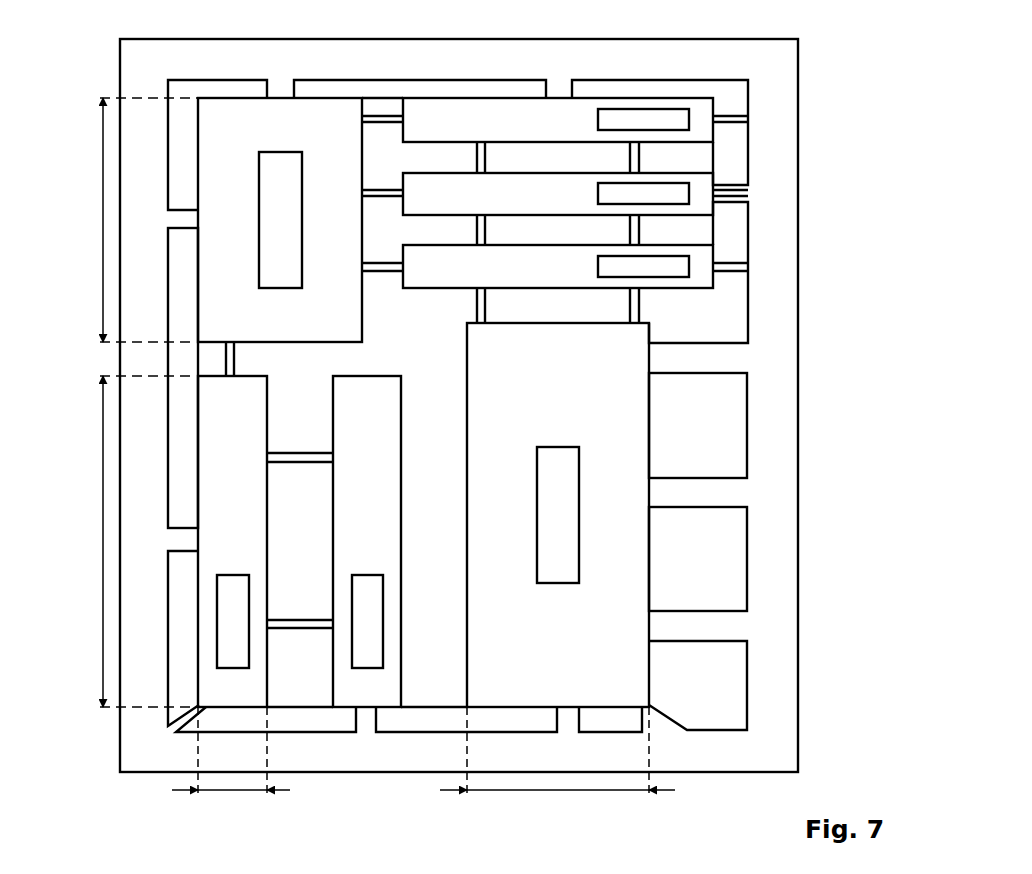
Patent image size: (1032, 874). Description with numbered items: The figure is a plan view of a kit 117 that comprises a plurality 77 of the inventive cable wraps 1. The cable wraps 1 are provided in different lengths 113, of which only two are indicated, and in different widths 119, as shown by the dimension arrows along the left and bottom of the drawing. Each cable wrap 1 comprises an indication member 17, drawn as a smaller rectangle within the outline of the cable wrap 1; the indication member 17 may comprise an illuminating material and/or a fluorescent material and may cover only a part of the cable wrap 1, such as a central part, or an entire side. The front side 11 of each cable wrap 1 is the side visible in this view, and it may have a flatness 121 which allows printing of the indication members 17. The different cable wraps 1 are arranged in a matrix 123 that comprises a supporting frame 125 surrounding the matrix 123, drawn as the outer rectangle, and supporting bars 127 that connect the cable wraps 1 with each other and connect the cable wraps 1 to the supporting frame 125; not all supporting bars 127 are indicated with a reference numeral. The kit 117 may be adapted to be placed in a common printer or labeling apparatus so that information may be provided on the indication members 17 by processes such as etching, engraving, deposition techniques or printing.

The cable wrap 1 is at (272, 234).
The front side 11 is at (875, 694).
The indication member 17 is at (278, 152).
The plurality of cable wraps 77 is at (700, 97).
The length 113 is at (100, 230).
The kit 117 is at (807, 202).
The width 119 is at (183, 792).
The flatness 121 is at (806, 679).
The matrix 123 is at (775, 417).
The supporting frame 125 is at (797, 757).
The supporting bar 127 is at (382, 116).